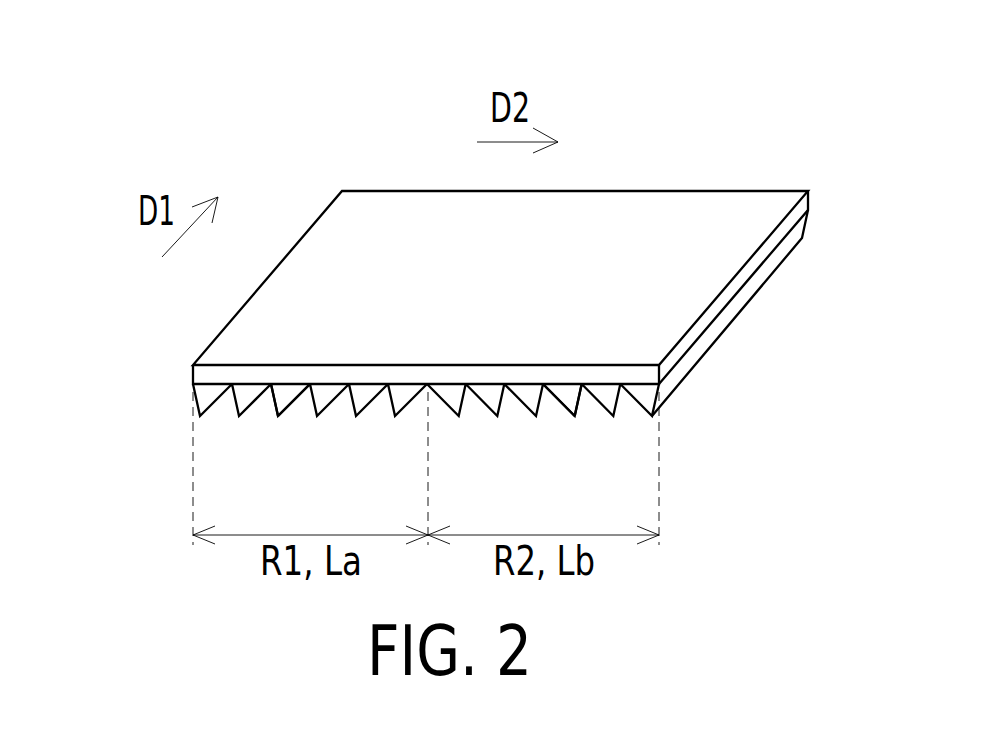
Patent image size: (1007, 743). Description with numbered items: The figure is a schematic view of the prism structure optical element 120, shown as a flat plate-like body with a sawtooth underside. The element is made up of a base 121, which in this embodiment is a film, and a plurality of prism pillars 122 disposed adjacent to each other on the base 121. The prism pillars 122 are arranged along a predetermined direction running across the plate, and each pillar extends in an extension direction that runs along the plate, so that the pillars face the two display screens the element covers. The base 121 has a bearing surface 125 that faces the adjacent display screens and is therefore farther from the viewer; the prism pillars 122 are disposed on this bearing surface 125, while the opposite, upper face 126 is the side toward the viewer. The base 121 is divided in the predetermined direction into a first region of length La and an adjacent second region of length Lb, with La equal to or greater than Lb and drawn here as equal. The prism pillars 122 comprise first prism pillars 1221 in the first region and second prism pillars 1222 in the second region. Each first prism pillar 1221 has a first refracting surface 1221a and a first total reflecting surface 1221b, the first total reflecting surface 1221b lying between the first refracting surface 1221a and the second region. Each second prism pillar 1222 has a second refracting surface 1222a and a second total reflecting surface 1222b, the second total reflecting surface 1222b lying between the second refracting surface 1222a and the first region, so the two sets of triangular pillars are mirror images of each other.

The prism structure optical element 120 is at (118, 107).
The base 121 is at (697, 218).
The prism pillars 122 is at (446, 337).
The bearing surface 125 is at (323, 387).
The light emitting surface 126 is at (395, 250).
The first prism pillars 1221 is at (207, 397).
The second prism pillars 1222 is at (720, 325).
The first refracting surface 1221a is at (277, 403).
The first total reflecting surface 1221b is at (293, 403).
The second refracting surface 1222a is at (582, 403).
The second total reflecting surface 1222b is at (558, 403).